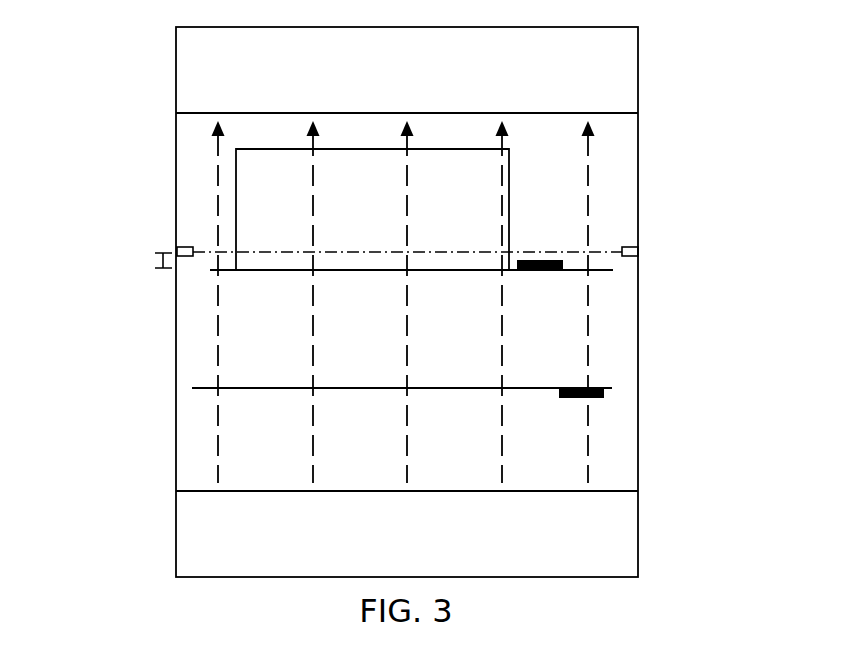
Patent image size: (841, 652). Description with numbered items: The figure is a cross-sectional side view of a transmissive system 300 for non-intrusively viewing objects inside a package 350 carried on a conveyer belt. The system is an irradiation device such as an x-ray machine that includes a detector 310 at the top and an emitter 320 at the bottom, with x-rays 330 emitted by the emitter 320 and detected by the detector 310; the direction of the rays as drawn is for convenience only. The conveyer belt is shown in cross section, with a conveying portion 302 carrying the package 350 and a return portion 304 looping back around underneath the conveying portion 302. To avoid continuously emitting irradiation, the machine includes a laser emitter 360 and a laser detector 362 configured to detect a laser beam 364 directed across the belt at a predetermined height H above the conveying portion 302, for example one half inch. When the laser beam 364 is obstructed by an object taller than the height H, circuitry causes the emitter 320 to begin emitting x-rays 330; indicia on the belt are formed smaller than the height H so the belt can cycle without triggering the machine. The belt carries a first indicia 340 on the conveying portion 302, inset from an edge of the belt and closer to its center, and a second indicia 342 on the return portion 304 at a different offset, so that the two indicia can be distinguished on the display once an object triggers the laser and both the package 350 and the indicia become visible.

The transmissive system 300 is at (100, 118).
The detector 310 is at (407, 80).
The emitter 320 is at (407, 525).
The x-rays 330 is at (216, 338).
The package 350 is at (243, 174).
The laser beam 364 is at (601, 250).
The laser emitter 360 is at (177, 249).
The laser detector 362 is at (638, 251).
The height H is at (160, 253).
The conveying portion 302 is at (210, 271).
The first indicia 340 is at (548, 270).
The return portion 304 is at (193, 389).
The second indicia 342 is at (604, 393).